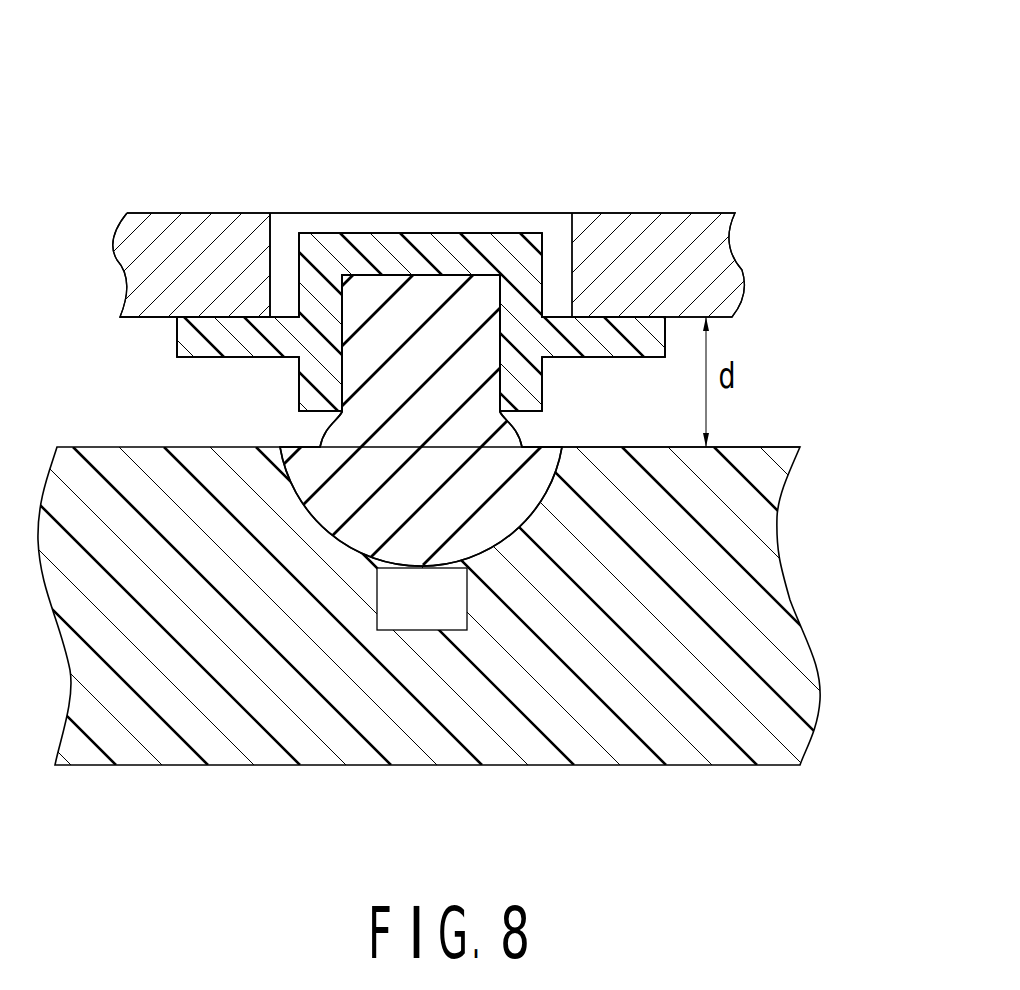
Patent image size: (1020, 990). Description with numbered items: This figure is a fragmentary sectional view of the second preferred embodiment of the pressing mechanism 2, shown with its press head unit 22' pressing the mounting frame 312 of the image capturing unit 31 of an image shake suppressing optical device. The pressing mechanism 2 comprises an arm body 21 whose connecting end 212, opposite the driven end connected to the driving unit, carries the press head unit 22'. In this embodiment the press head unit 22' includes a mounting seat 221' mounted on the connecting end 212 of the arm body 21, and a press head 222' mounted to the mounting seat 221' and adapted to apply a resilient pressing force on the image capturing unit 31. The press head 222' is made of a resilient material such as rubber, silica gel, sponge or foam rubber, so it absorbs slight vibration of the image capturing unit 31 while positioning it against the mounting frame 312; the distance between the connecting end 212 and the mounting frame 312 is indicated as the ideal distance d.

The pressing mechanism 2 is at (703, 170).
The arm body 21 is at (173, 213).
The connecting end 212 is at (233, 252).
The press head unit 22' is at (421, 291).
The mounting seat 221' is at (424, 244).
The press head 222' is at (418, 321).
The image capturing unit 31 is at (722, 760).
The mounting frame 312 is at (763, 465).